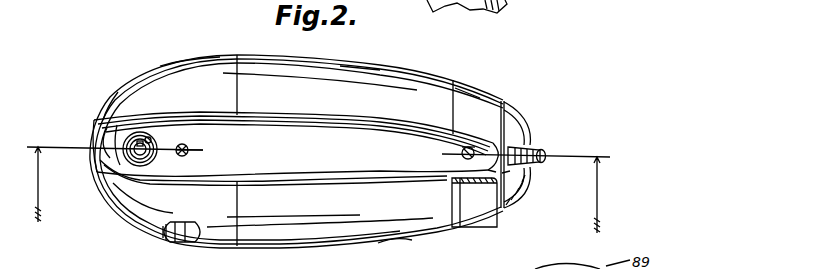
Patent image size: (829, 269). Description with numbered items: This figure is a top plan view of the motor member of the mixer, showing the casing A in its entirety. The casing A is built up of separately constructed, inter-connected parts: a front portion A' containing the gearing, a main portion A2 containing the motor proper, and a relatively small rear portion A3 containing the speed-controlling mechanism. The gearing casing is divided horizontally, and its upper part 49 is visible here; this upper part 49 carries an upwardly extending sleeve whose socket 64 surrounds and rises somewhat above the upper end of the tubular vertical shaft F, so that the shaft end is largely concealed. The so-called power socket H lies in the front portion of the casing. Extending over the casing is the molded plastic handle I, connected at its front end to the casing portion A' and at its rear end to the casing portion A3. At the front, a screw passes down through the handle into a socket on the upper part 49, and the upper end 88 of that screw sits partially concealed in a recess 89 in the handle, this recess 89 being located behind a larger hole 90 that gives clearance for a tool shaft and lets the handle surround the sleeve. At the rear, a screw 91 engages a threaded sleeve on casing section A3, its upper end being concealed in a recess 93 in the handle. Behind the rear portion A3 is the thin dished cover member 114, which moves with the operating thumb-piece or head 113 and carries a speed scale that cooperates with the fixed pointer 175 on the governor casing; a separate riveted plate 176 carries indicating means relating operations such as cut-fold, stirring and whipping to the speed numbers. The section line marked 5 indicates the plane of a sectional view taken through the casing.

The casing A is at (297, 138).
The front portion A' is at (185, 50).
The main portion A2 is at (363, 73).
The rear portion A3 is at (473, 97).
The upper part 49 is at (125, 88).
The handle I is at (329, 128).
The socket 64 is at (140, 132).
The hole 90 is at (157, 133).
The upper end of screw 88 is at (190, 144).
The recess 89 is at (189, 156).
The vertical shaft F is at (107, 167).
The power socket H is at (184, 239).
The screw 91 is at (461, 156).
The recess 93 is at (461, 149).
The pointer 175 is at (493, 168).
The plate 176 is at (482, 228).
The cover member 114 is at (512, 122).
The thumb-piece or head 113 is at (542, 153).
The section line 5 is at (317, 190).